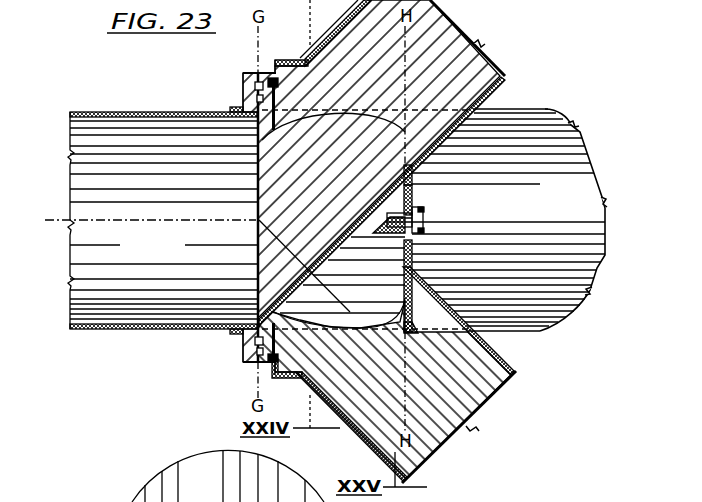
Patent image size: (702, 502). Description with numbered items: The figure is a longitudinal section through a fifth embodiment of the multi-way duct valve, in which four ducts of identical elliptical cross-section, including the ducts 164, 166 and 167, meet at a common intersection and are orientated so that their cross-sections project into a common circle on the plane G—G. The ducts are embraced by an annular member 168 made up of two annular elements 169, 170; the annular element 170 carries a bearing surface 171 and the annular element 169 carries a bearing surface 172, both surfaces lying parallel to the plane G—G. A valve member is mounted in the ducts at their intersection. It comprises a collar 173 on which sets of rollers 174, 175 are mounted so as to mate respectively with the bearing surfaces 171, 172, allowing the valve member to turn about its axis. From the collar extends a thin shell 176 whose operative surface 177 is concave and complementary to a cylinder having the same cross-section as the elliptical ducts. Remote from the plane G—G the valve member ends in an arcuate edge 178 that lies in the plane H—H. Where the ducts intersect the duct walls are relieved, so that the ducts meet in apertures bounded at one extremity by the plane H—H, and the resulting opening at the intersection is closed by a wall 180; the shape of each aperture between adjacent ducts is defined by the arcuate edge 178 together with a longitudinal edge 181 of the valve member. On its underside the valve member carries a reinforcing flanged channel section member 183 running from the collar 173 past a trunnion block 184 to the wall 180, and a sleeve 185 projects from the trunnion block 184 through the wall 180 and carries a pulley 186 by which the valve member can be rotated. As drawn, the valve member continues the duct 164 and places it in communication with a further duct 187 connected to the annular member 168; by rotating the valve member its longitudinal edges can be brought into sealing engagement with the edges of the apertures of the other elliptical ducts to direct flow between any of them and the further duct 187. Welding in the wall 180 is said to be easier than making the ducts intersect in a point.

The duct 164 is at (448, 79).
The duct 166 is at (460, 398).
The duct 167 is at (598, 183).
The annular member 168 is at (248, 361).
The annular element 169 is at (284, 379).
The annular element 170 is at (246, 344).
The bearing surface 171 is at (250, 378).
The bearing surface 172 is at (281, 78).
The collar 173 is at (246, 97).
The set of rollers 174 is at (246, 84).
The set of rollers 175 is at (246, 70).
The thin shell 176 is at (356, 171).
The operative surface 177 is at (325, 206).
The arcuate edge 178 is at (411, 167).
The wall 180 is at (412, 248).
The longitudinal edge 181 is at (355, 109).
The reinforcing flanged channel section member 183 is at (412, 184).
The trunnion block 184 is at (399, 205).
The sleeve 185 is at (424, 216).
The pulley 186 is at (425, 229).
The further duct 187 is at (151, 220).